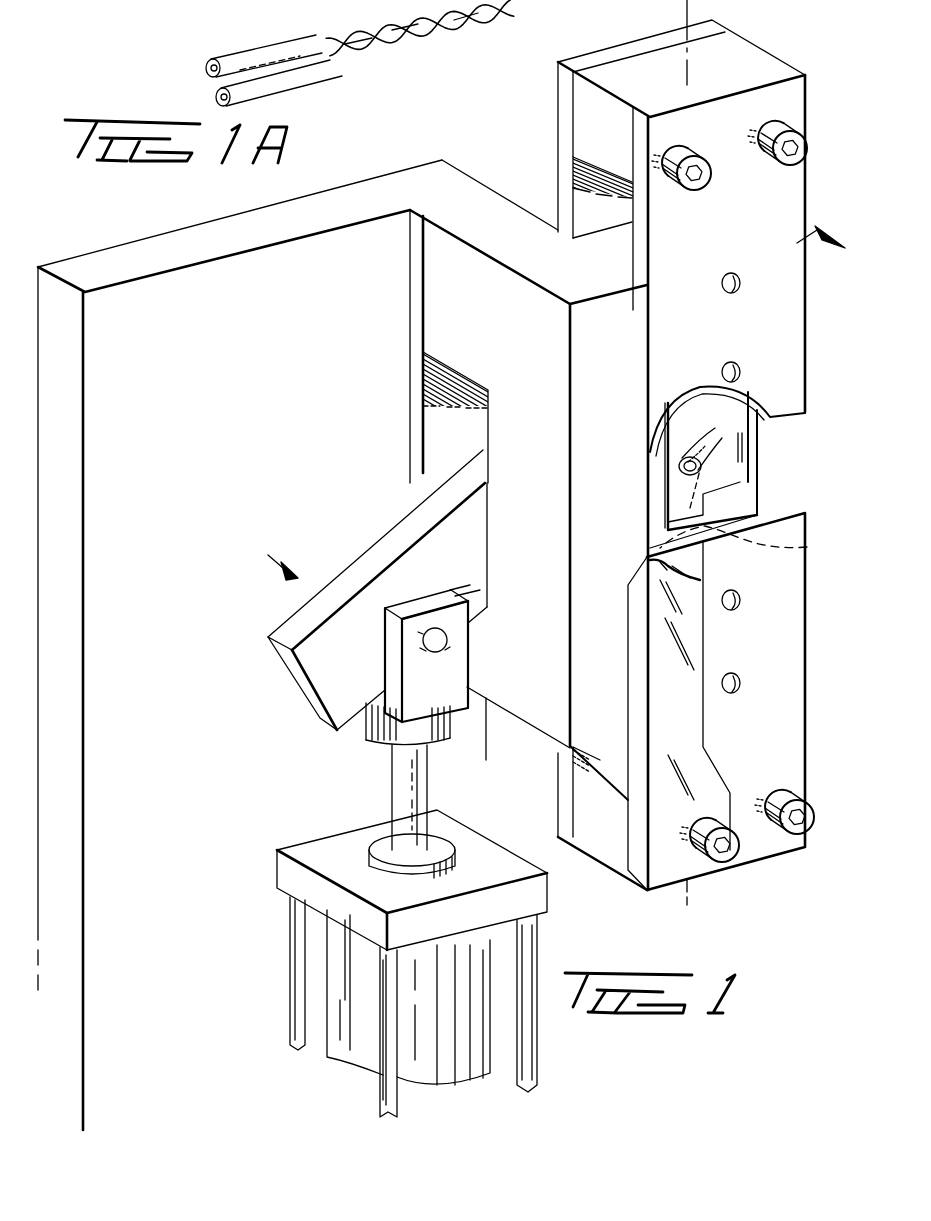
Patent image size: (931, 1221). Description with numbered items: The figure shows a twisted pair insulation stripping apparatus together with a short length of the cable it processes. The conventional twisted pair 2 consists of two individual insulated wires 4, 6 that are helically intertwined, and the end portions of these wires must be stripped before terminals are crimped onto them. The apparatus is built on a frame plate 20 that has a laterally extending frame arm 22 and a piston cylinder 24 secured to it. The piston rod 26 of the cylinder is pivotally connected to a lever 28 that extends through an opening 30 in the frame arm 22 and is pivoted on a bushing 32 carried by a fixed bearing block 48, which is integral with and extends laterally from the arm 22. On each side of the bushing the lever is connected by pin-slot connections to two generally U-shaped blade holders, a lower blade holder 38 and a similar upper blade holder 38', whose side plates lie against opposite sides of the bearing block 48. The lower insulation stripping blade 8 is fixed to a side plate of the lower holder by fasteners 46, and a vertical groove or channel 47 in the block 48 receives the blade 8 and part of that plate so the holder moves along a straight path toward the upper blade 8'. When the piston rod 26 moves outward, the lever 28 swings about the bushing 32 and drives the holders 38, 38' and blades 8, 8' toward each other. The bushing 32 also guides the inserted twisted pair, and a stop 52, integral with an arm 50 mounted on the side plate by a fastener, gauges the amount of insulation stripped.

In FIG. 1A, the twisted pair 2 is at (331, 53).
In FIG. 1, the twisted pair 2 is at (683, 904).
In FIG. 1A, the wire 4 is at (320, 58).
In FIG. 1, the wire 4 is at (567, 411).
In FIG. 1A, the wire 6 is at (325, 40).
In FIG. 1, the lower insulation stripping blade 8 is at (751, 466).
In FIG. 1, the upper insulation stripping blade 8' is at (745, 421).
In FIG. 1, the frame plate 20 is at (182, 246).
In FIG. 1, the frame arm 22 is at (485, 222).
In FIG. 1, the piston cylinder 24 is at (350, 985).
In FIG. 1, the piston rod 26 is at (400, 797).
In FIG. 1, the lever 28 is at (462, 565).
In FIG. 1, the opening 30 is at (445, 415).
In FIG. 1, the bushing 32 is at (708, 445).
In FIG. 1, the lower blade holder 38 is at (602, 847).
In FIG. 1, the upper blade holder 38' is at (752, 479).
In FIG. 1, the fasteners 46 is at (742, 290).
In FIG. 1, the vertical groove or channel 47 is at (750, 443).
In FIG. 1, the bearing block 48 is at (612, 244).
In FIG. 1, the arm 50 is at (680, 722).
In FIG. 1, the stop 52 is at (808, 549).